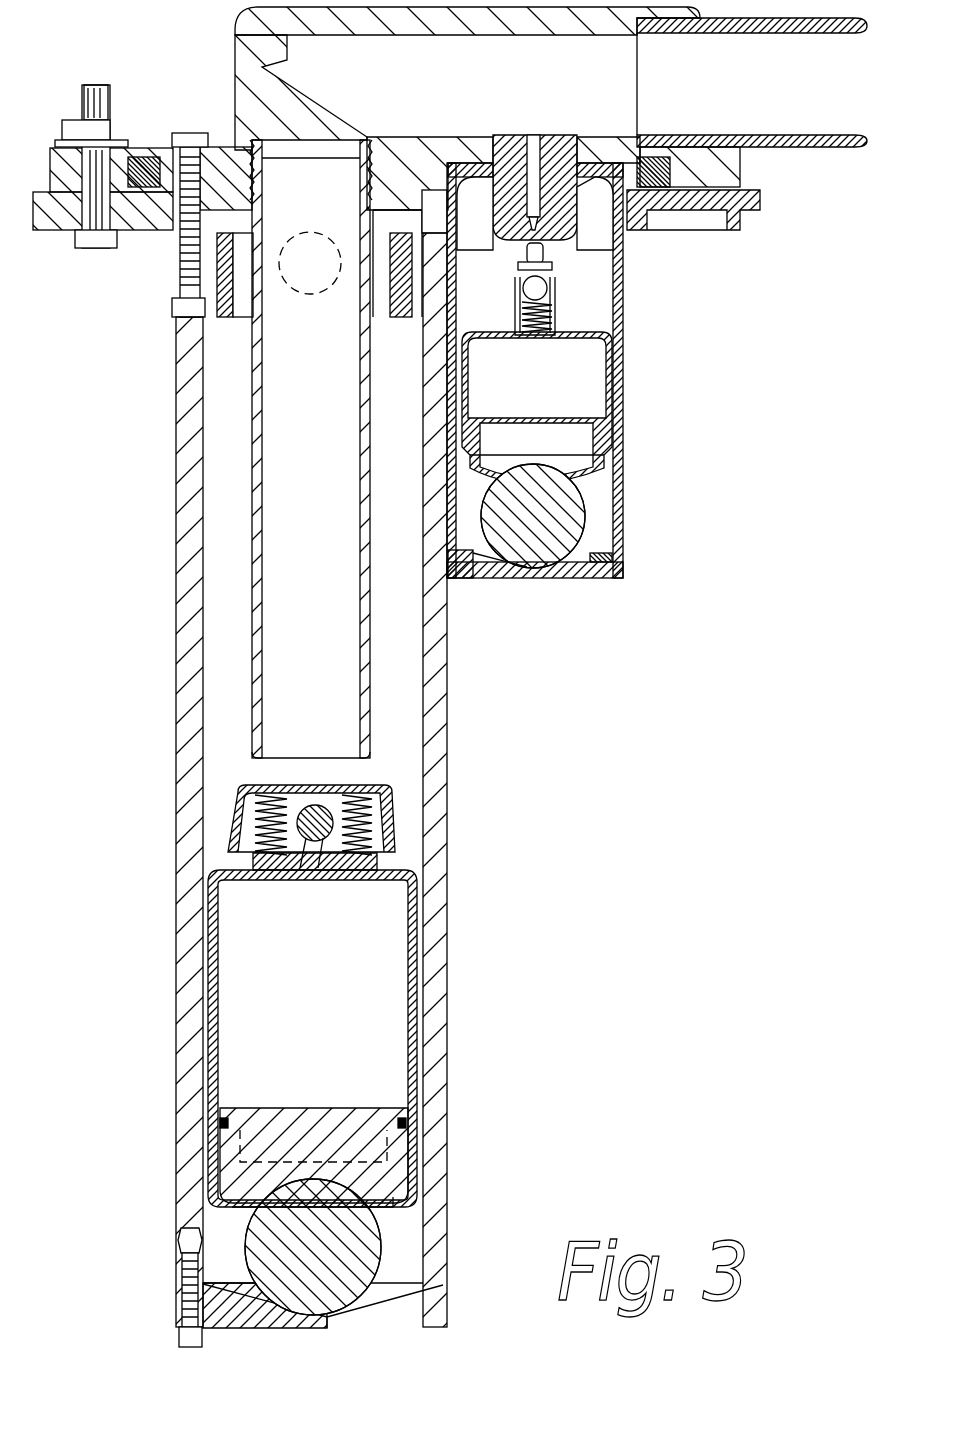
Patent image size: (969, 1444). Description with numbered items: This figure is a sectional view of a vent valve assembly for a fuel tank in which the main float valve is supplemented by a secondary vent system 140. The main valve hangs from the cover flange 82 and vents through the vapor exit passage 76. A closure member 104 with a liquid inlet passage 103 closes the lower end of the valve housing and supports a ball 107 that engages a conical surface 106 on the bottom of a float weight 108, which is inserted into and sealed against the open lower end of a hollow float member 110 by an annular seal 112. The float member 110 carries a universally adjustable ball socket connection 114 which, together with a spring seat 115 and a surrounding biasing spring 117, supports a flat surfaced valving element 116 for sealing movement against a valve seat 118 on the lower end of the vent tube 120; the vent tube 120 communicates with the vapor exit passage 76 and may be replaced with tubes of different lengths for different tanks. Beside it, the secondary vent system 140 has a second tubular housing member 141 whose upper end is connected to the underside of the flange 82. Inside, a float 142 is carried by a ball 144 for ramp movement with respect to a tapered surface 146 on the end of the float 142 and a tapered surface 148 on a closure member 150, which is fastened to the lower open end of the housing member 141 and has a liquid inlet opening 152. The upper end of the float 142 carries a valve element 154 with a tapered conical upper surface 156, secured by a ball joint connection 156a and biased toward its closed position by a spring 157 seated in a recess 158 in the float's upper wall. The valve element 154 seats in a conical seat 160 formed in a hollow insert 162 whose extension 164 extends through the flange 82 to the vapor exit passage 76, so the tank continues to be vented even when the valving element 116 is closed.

The vapor exit passage 76 is at (426, 97).
The cover flange 82 is at (693, 155).
The liquid inlet passage 103 is at (395, 1316).
The closure member 104 is at (258, 1312).
The conical surface 106 is at (368, 1250).
The ball 107 is at (395, 1205).
The float weight 108 is at (402, 1172).
The float member 110 is at (417, 910).
The annular seal 112 is at (405, 1120).
The ball socket connection 114 is at (322, 818).
The spring seat 115 is at (400, 795).
The valving element 116 is at (272, 790).
The biasing spring 117 is at (257, 860).
The valve seat 118 is at (367, 772).
The vent tube 120 is at (255, 556).
The secondary vent system 140 is at (638, 276).
The second tubular housing member 141 is at (628, 402).
The float 142 is at (612, 363).
The ball 144 is at (573, 513).
The tapered surface 146 is at (572, 478).
The tapered surface 148 is at (590, 553).
The closure member 150 is at (586, 578).
The liquid inlet opening 152 is at (478, 578).
The valve element 154 is at (560, 253).
The tapered conical upper surface 156 is at (525, 250).
The ball joint connection 156a is at (528, 282).
The spring 157 is at (548, 318).
The recess 158 is at (535, 335).
The conical seat 160 is at (562, 205).
The hollow insert 162 is at (484, 190).
The extension 164 is at (545, 140).